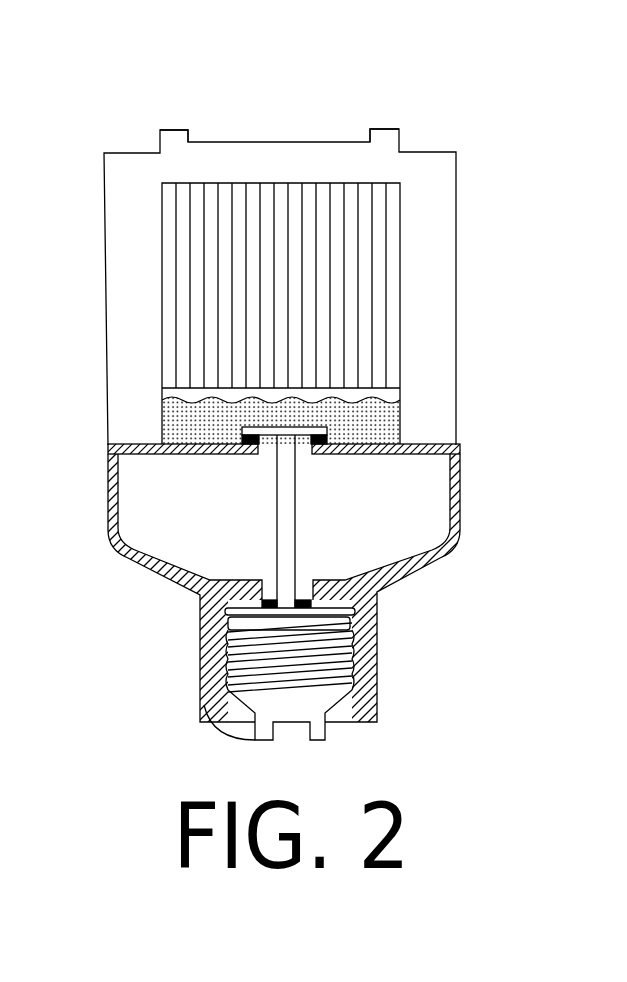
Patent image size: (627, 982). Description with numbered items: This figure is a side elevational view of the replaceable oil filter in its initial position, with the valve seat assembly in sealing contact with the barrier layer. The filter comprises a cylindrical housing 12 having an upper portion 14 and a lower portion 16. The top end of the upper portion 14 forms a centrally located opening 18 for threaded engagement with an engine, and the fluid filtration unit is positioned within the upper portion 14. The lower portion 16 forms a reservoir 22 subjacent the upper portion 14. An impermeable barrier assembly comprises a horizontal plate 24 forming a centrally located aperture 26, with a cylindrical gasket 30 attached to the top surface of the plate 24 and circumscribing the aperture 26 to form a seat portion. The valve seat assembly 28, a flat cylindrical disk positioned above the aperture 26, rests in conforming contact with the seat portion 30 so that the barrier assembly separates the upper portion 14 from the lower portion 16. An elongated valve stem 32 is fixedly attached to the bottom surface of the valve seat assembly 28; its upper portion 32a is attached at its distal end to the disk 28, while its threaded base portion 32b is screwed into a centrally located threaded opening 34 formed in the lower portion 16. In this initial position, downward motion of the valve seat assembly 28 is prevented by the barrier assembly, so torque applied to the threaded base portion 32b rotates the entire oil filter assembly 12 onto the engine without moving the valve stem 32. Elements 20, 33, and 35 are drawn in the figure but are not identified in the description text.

The cylindrical housing 12 is at (472, 272).
The upper portion 14 is at (443, 180).
The lower portion 16 is at (110, 517).
The centrally located opening 18 is at (130, 135).
The finned core 20 is at (286, 195).
The reservoir 22 is at (398, 545).
The horizontal plate 24 is at (426, 449).
The aperture 26 is at (264, 457).
The valve seat assembly 28 is at (228, 427).
The cylindrical gasket 30 is at (345, 436).
The valve stem 32 is at (326, 569).
The upper portion of valve stem 32a is at (287, 512).
The threaded base portion 32b is at (345, 681).
The center contact 33 is at (297, 726).
The threaded opening 34 is at (331, 732).
The base shoulder 35 is at (203, 598).